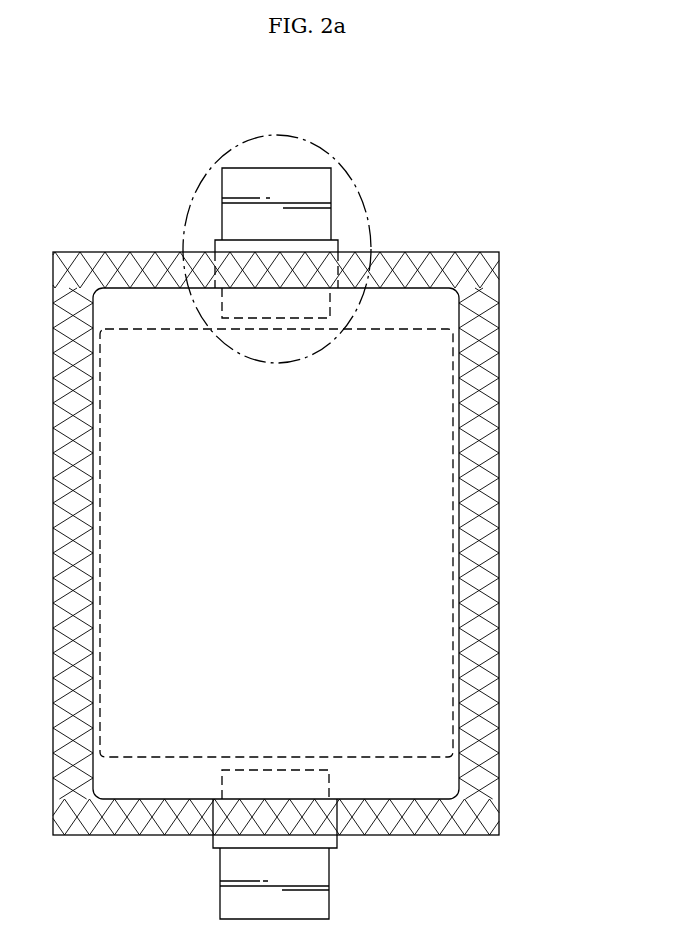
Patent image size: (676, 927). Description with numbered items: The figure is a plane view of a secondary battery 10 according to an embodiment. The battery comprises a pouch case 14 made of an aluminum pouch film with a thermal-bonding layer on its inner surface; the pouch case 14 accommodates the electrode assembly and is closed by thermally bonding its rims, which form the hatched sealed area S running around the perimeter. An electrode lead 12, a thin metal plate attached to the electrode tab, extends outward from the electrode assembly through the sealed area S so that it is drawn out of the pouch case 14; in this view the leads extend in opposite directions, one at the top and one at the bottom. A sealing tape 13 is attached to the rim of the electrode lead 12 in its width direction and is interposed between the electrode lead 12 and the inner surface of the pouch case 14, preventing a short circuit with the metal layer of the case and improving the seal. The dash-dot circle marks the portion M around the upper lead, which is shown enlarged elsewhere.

The secondary battery 10 is at (406, 118).
The electrode lead 12 is at (326, 189).
The sealing tape 13 is at (333, 244).
The pouch case 14 is at (436, 318).
The sealed area S is at (485, 487).
The portion M is at (337, 147).